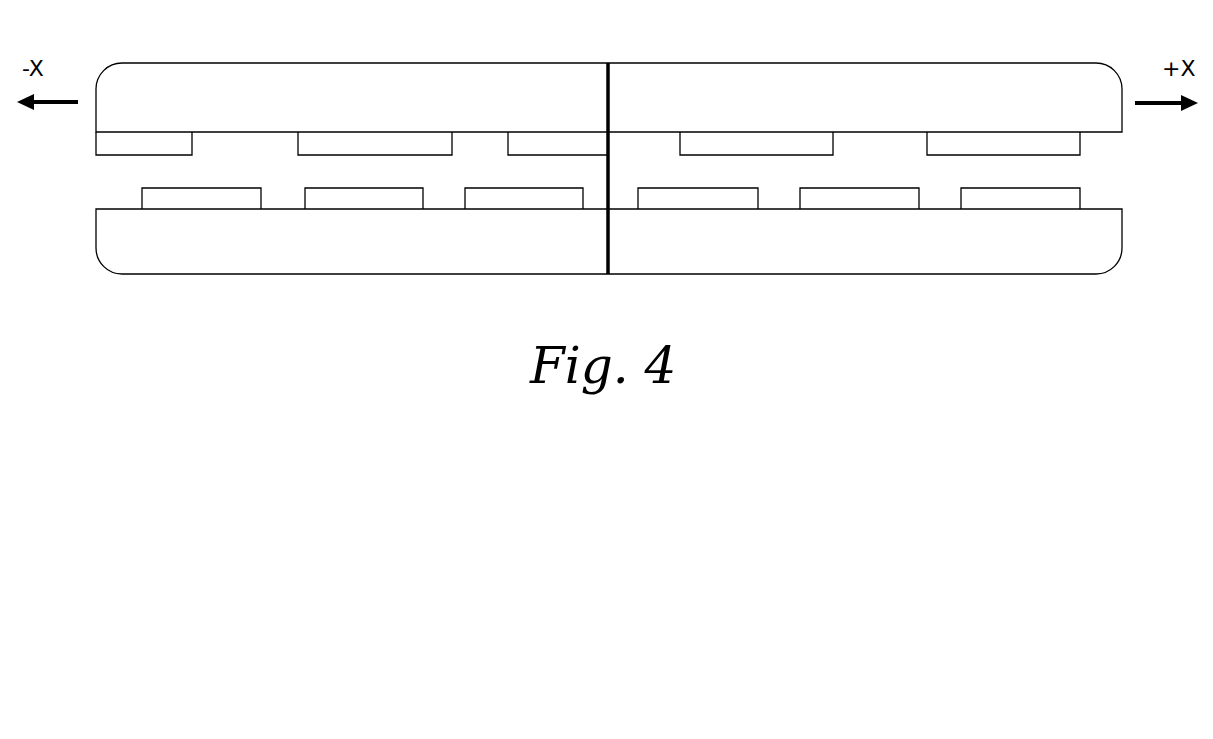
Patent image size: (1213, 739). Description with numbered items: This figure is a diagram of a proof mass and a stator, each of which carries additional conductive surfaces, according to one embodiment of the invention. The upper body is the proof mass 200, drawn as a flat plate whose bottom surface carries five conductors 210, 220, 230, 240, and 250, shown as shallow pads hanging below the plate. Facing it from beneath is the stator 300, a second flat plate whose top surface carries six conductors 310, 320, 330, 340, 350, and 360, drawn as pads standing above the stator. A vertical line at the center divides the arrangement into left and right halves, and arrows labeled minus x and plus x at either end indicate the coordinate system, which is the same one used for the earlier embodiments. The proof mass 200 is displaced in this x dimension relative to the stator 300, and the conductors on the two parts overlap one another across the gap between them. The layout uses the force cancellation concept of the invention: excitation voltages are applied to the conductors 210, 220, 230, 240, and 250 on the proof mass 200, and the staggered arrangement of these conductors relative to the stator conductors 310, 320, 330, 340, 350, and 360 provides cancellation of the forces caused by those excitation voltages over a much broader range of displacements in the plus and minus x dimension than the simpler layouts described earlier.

The proof mass 200 is at (300, 63).
The conductor 210 is at (143, 132).
The conductor 220 is at (377, 132).
The conductor 230 is at (522, 132).
The conductor 240 is at (757, 132).
The conductor 250 is at (1003, 132).
The stator 300 is at (110, 236).
The conductor 310 is at (185, 210).
The conductor 320 is at (345, 210).
The conductor 330 is at (507, 210).
The conductor 340 is at (680, 210).
The conductor 350 is at (843, 210).
The conductor 360 is at (1003, 210).